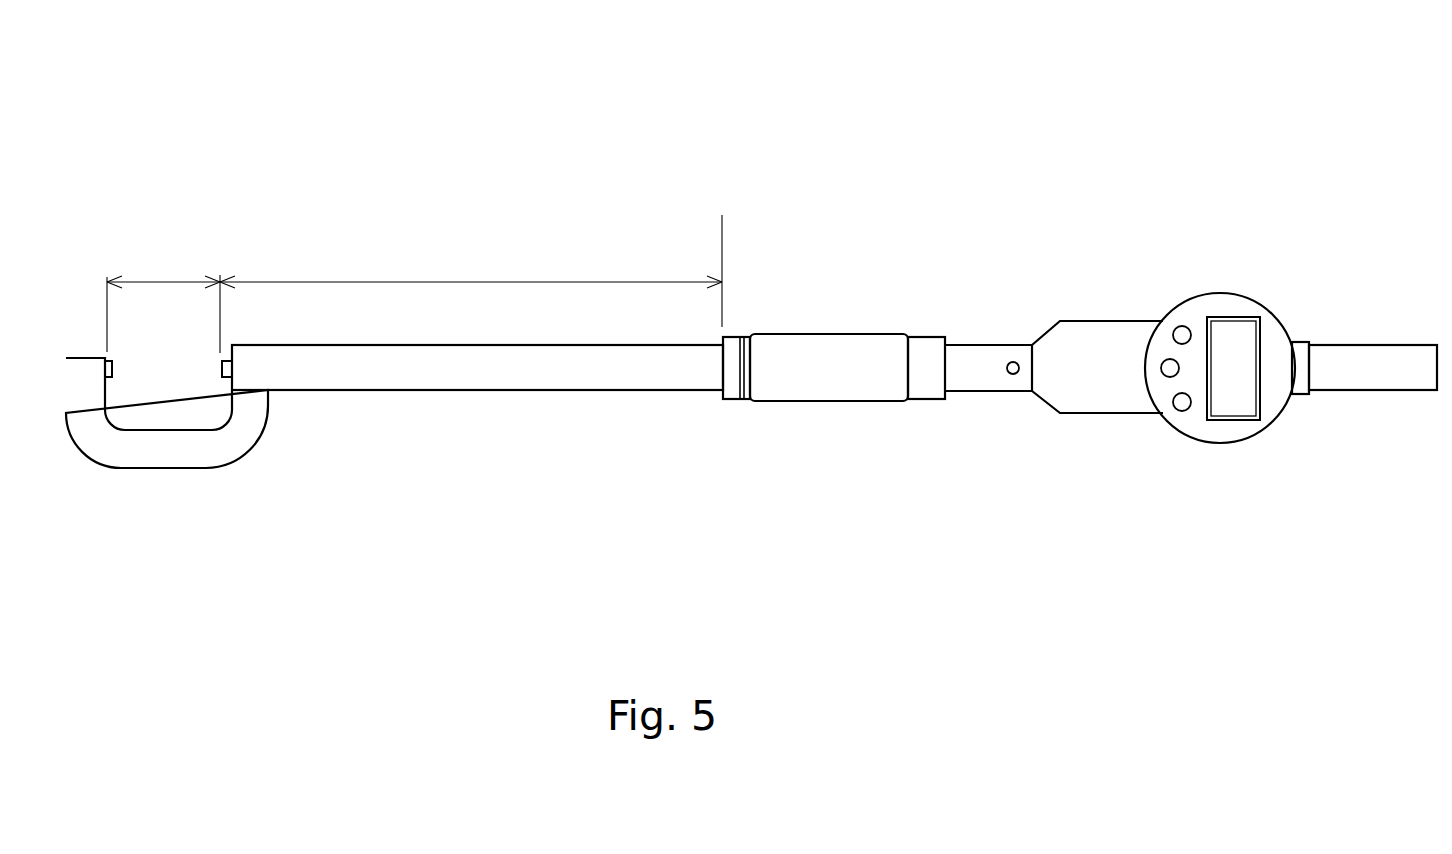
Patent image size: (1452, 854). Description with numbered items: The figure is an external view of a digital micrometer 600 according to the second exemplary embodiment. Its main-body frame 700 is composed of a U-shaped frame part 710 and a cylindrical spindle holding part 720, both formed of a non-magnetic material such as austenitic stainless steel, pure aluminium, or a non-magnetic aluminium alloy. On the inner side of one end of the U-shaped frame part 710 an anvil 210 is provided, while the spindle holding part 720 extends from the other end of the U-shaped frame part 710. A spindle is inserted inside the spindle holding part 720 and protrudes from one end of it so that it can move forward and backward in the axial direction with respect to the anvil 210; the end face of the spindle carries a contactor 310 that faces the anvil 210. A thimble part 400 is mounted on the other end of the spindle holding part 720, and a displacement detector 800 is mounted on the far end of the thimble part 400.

The digital micrometer 600 is at (332, 150).
The main-body frame 700 is at (397, 438).
The U-shaped frame part 710 is at (202, 465).
The spindle holding part 720 is at (537, 382).
The anvil 210 is at (112, 367).
The contactor 310 is at (222, 370).
The thimble part 400 is at (815, 400).
The displacement detector 800 is at (1100, 403).